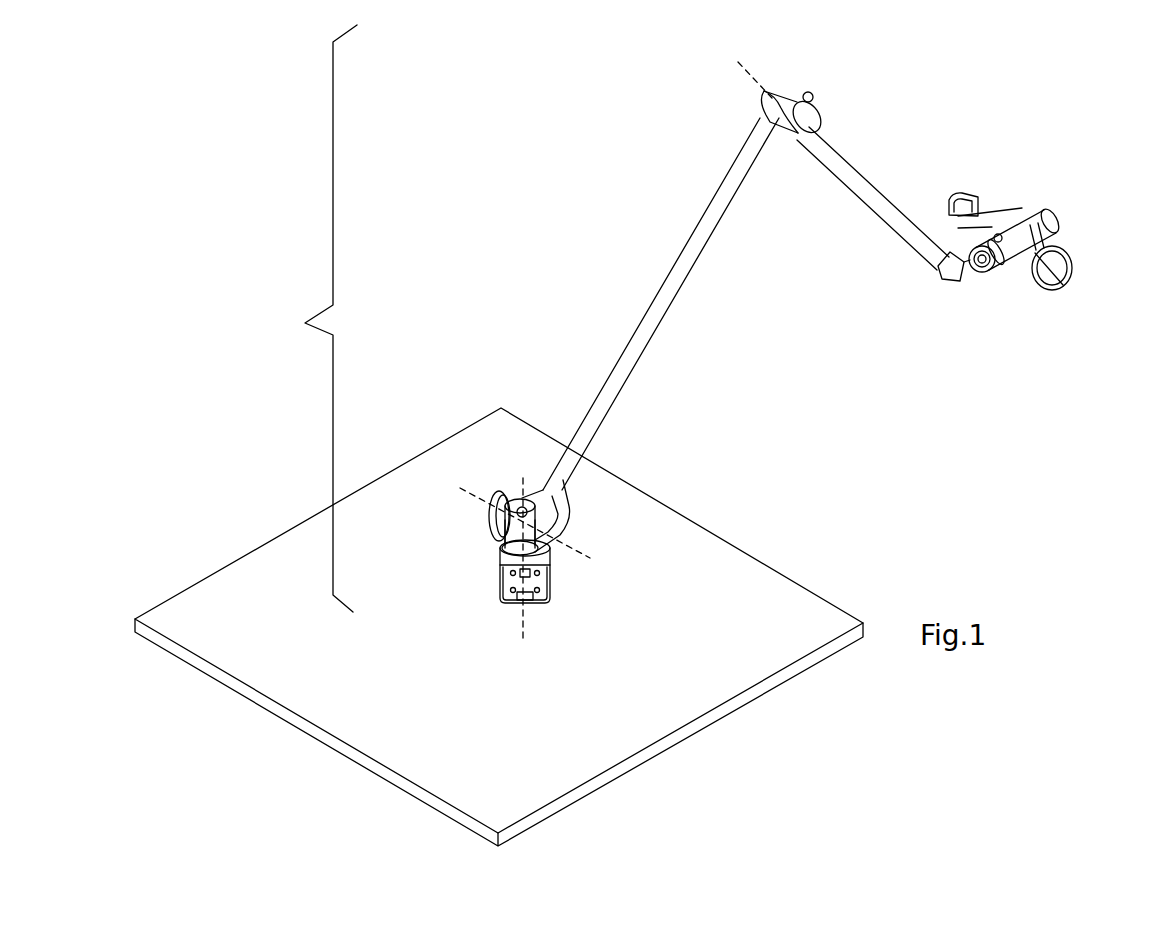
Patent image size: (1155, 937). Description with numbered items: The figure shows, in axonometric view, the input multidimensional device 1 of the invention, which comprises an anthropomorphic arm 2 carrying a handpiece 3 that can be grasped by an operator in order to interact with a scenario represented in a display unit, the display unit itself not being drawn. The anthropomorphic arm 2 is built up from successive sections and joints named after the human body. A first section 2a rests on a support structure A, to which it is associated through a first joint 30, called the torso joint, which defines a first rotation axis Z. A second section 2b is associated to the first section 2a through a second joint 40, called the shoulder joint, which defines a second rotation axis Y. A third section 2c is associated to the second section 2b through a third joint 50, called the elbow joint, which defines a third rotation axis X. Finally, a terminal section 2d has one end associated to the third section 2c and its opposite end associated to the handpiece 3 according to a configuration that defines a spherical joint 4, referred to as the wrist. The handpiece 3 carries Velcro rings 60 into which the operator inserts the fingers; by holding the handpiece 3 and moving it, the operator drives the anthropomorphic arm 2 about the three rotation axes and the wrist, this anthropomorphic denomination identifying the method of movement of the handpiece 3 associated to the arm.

The input multidimensional device 1 is at (305, 323).
The anthropomorphic arm 2 is at (702, 145).
The first section 2a is at (493, 542).
The second section 2b is at (637, 272).
The third section 2c is at (870, 157).
The terminal section 2d is at (973, 284).
The handpiece 3 is at (1038, 244).
The spherical joint 4 is at (986, 280).
The first joint 30 is at (497, 583).
The second joint 40 is at (587, 507).
The third joint 50 is at (815, 82).
The Velcro rings 60 is at (957, 193).
The support structure A is at (760, 593).
The third rotation axis X is at (755, 67).
The second rotation axis Y is at (587, 560).
The first rotation axis Z is at (522, 625).